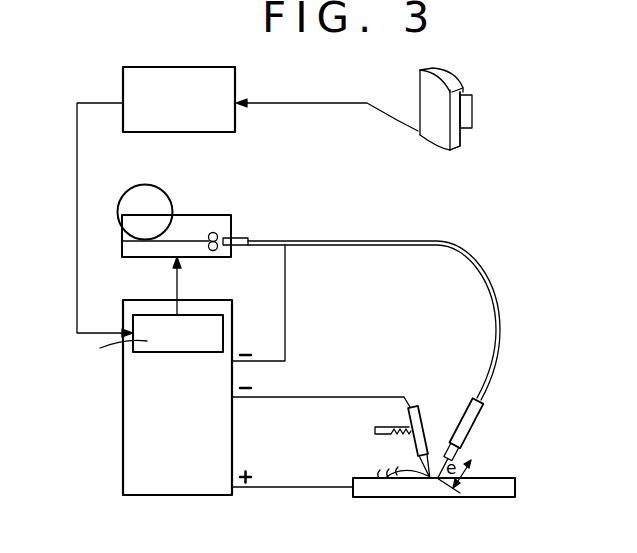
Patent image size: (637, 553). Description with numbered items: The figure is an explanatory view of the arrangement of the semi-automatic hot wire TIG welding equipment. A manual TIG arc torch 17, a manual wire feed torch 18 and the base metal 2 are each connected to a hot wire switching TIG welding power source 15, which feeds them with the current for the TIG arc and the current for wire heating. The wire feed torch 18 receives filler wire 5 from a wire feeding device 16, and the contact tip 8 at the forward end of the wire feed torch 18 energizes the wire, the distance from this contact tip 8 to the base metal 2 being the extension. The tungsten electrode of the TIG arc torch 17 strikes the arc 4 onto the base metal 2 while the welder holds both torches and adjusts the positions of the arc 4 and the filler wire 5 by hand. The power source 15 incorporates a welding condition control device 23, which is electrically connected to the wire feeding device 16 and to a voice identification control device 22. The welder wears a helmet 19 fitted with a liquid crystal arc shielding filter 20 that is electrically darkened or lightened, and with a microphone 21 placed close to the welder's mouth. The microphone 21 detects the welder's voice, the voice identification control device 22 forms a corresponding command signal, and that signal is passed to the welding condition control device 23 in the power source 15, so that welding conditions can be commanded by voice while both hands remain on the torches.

The base metal 2 is at (433, 498).
The arc 4 is at (420, 470).
The filler wire 5 is at (436, 467).
The contact tip 8 is at (462, 446).
The hot wire switching TIG welding power source 15 is at (183, 496).
The wire feeding device 16 is at (188, 215).
The manual TIG arc torch 17 is at (420, 406).
The manual wire feed torch 18 is at (476, 413).
The helmet 19 is at (463, 75).
The arc shielding filter 20 is at (472, 110).
The microphone 21 is at (462, 146).
The voice identification control device 22 is at (183, 66).
The welding condition control device 23 is at (168, 353).